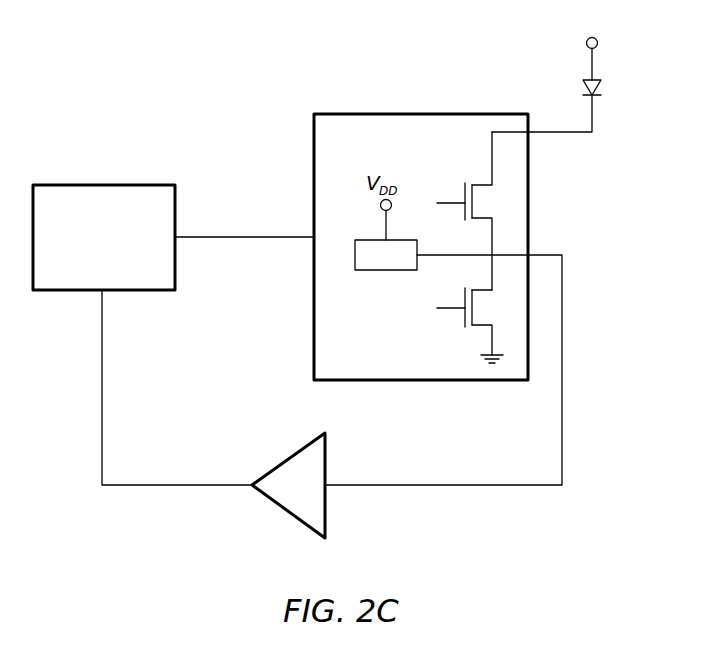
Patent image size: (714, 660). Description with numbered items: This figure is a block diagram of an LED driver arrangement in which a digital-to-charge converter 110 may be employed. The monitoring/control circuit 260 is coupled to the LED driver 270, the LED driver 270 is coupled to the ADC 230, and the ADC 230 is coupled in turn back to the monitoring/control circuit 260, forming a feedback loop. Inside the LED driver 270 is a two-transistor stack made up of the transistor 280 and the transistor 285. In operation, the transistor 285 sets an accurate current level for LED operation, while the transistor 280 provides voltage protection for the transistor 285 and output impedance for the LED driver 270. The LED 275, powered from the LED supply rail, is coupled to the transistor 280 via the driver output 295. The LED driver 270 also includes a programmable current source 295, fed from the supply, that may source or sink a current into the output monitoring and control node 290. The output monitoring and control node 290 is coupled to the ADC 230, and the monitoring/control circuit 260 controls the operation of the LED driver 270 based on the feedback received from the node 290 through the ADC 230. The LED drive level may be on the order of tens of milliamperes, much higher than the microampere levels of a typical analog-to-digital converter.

The digital-to-charge converter 110 is at (116, 100).
The monitoring/control circuit 260 is at (86, 269).
The LED driver 270 is at (447, 114).
The transistor 280 is at (486, 185).
The transistor 285 is at (486, 325).
The driver output / programmable current source 295 is at (403, 270).
The output monitoring and control node 290 is at (563, 290).
The LED 275 is at (600, 88).
The ADC 230 is at (283, 510).